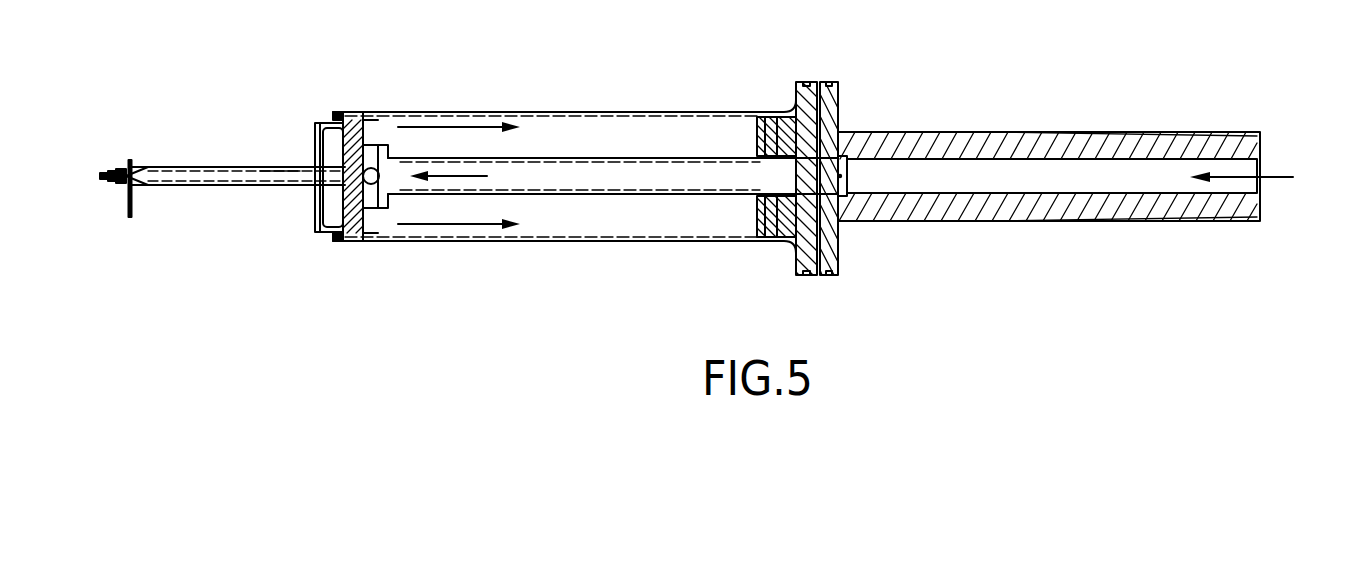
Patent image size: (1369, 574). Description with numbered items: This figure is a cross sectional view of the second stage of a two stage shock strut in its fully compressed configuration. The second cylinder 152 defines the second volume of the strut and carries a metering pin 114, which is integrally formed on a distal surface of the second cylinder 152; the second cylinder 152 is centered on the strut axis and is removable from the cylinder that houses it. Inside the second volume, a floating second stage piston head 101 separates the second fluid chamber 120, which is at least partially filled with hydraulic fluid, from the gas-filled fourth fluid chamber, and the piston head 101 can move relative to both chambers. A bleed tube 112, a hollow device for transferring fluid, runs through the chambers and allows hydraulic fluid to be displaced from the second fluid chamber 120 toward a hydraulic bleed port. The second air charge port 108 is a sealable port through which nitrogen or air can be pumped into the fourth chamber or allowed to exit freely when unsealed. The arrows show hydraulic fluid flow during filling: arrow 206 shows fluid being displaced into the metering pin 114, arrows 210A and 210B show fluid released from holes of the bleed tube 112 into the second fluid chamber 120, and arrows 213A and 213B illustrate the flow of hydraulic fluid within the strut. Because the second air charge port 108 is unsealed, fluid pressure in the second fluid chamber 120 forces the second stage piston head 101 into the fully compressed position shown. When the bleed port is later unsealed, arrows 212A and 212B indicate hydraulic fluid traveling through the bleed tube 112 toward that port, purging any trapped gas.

The bleed tube 112 is at (222, 168).
The arrow 212B is at (272, 170).
The arrow 212A is at (438, 178).
The arrow 210B is at (369, 132).
The arrow 210A is at (369, 222).
The arrow 213B is at (462, 128).
The arrow 213A is at (492, 228).
The second fluid chamber 120 is at (613, 112).
The second stage piston head 101 is at (757, 113).
The second air charge port 108 is at (838, 82).
The metering pin 114 is at (908, 170).
The second cylinder 152 is at (880, 222).
The arrow 206 is at (1280, 177).